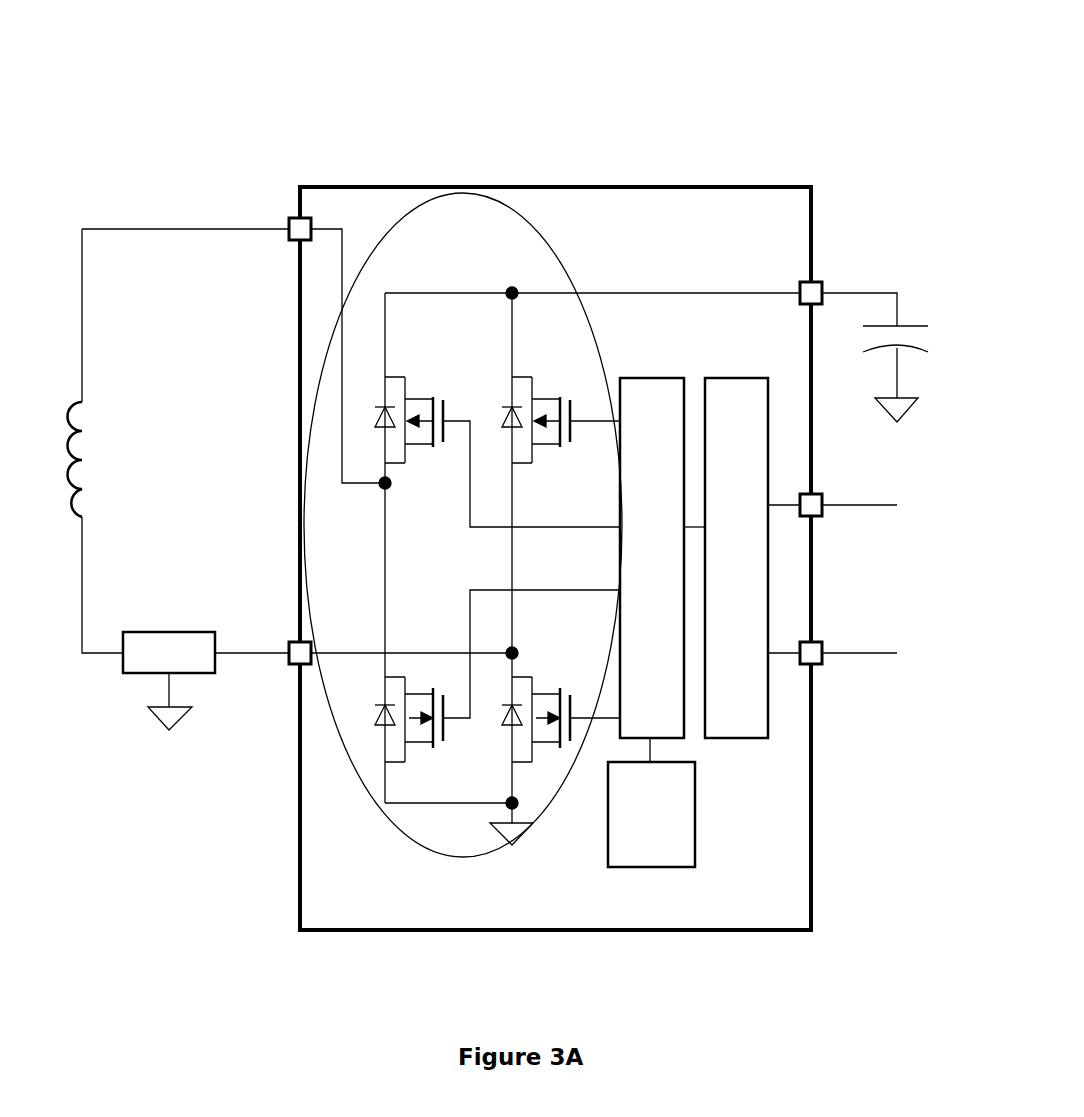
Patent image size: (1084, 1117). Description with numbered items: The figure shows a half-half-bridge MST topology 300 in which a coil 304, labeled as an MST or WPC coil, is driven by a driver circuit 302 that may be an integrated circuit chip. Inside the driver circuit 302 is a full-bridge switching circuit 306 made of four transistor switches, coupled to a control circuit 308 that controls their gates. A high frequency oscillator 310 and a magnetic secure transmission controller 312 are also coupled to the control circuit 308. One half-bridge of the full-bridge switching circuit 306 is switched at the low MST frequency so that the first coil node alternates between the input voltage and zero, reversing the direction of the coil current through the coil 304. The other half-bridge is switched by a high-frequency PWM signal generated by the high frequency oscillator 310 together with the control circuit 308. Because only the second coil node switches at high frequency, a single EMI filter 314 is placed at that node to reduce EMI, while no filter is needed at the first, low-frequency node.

The half-half-bridge MST topology 300 is at (363, 115).
The driver circuit 302 is at (440, 184).
The coil 304 is at (77, 402).
The full-bridge switching circuit 306 is at (342, 737).
The control circuit 308 is at (676, 724).
The high frequency oscillator 310 is at (662, 867).
The magnetic secure transmission controller 312 is at (758, 397).
The EMI filter 314 is at (147, 655).